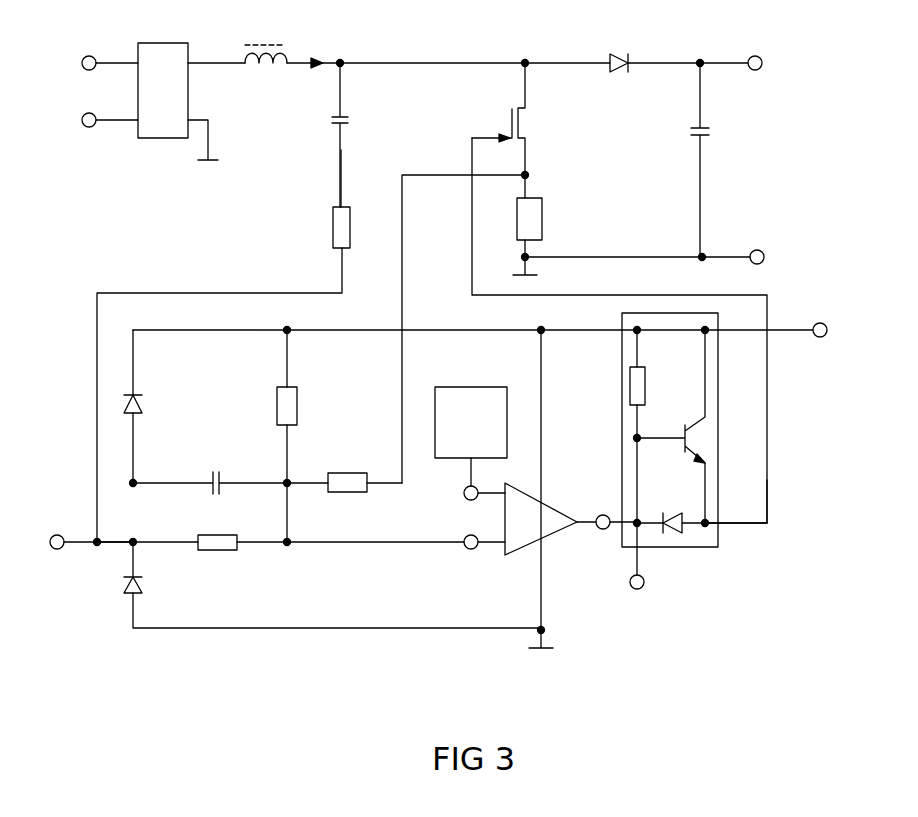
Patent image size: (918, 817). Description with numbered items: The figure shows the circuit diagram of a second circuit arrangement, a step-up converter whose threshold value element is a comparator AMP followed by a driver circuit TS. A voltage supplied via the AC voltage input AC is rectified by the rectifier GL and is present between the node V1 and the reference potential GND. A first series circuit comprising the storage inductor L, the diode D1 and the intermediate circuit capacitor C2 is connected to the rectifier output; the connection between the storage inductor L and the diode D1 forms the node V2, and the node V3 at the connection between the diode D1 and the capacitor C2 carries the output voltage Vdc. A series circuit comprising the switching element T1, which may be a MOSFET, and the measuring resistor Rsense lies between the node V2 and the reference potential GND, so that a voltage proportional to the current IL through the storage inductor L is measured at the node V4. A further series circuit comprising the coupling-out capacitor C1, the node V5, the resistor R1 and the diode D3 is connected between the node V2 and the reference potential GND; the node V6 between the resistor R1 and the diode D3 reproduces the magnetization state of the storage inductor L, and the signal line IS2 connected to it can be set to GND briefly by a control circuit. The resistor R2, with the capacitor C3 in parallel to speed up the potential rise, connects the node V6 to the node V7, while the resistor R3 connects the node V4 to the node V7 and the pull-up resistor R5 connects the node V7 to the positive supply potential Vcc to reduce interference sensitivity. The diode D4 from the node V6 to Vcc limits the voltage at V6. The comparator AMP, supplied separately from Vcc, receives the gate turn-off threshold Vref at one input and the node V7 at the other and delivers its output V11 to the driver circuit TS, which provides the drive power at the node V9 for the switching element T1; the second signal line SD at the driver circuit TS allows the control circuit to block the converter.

The AC voltage input AC is at (102, 91).
The rectifier GL is at (178, 89).
The node V1 is at (216, 50).
The storage inductor L is at (266, 41).
The current IL is at (313, 46).
The node V2 is at (433, 52).
The coupling-out capacitor C1 is at (359, 135).
The voltage V5 node V5 is at (324, 178).
The resistor R1 is at (241, 374).
The switching element T1 is at (619, 293).
The node V4 is at (487, 325).
The measuring resistor Rsense is at (555, 225).
The reference potential GND is at (673, 260).
The diode D1 is at (612, 50).
The node V3 is at (716, 48).
The DC output terminal Vdc is at (778, 69).
The intermediate circuit capacitor C2 is at (718, 160).
The positive supply potential Vcc is at (502, 335).
The diode D4 is at (154, 406).
The pull-up resistor R5 is at (302, 406).
The capacitor C3 is at (210, 470).
The resistor R3 is at (344, 470).
The gate turn-off threshold Vref is at (471, 443).
The comparator AMP is at (441, 519).
The amplifier output voltage V11 is at (609, 507).
The signal line IS2 is at (71, 545).
The node V6 is at (110, 558).
The resistor R2 is at (210, 528).
The node V7 is at (292, 529).
The diode D3 is at (332, 585).
The driver circuit TS is at (694, 445).
The second signal line SD is at (640, 572).
The voltage V9 node V9 is at (753, 516).